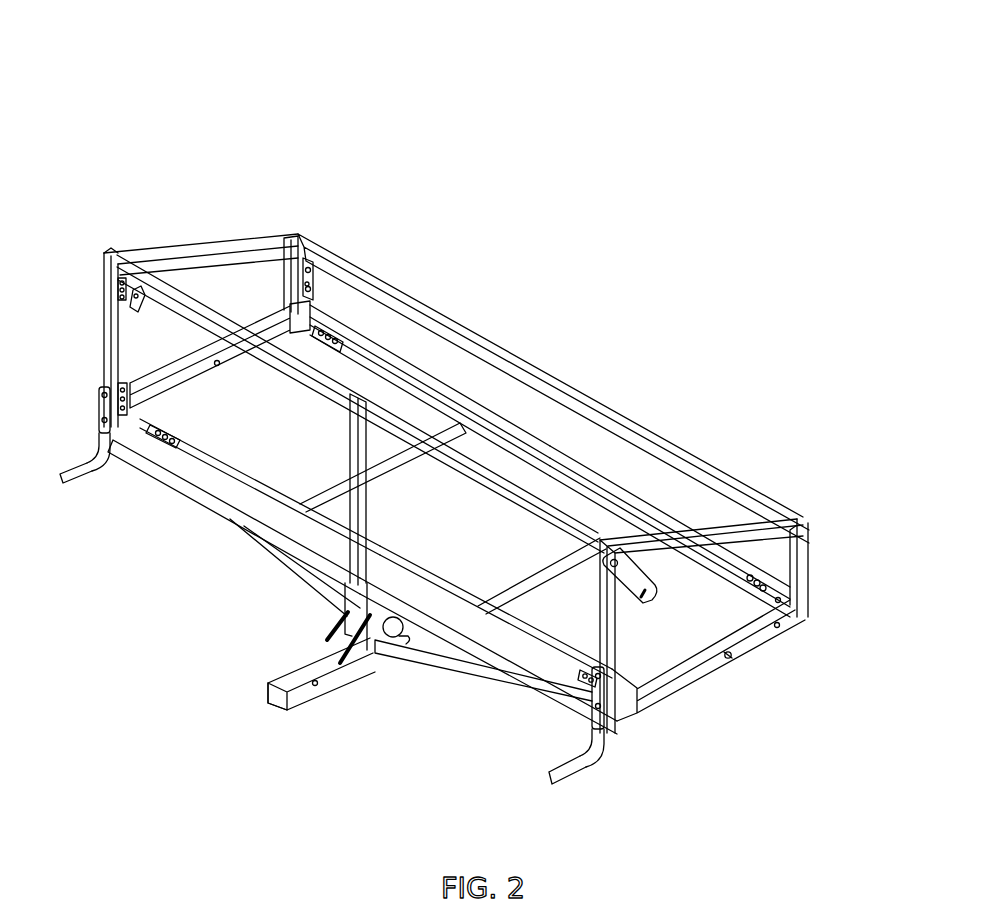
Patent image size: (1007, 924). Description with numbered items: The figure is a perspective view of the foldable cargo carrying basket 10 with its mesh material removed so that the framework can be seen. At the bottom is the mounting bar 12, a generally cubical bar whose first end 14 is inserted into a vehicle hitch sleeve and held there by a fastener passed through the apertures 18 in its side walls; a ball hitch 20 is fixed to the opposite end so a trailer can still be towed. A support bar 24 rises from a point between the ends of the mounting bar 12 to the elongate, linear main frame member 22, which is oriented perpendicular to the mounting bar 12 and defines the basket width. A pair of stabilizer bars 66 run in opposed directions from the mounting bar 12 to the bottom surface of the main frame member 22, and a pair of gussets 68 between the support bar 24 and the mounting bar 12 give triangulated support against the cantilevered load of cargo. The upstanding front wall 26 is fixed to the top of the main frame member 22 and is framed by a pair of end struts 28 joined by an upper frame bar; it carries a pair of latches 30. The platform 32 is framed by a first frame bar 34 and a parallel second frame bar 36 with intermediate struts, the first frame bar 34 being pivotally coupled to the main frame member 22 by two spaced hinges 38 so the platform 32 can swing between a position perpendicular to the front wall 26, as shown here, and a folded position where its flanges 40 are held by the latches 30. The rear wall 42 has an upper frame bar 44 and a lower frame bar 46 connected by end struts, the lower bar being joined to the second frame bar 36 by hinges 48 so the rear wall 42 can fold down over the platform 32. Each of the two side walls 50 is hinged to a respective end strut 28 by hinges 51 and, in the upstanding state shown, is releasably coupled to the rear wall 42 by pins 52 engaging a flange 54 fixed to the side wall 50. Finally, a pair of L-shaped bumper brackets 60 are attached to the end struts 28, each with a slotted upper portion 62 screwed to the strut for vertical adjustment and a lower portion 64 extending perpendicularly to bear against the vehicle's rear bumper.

The cargo carrying basket 10 is at (535, 92).
The mounting bar 12 is at (285, 674).
The first end 14 is at (266, 697).
The apertures 18 is at (313, 688).
The ball hitch 20 is at (398, 640).
The main frame member 22 is at (203, 486).
The support bar 24 is at (372, 592).
The front wall 26 is at (104, 242).
The end struts 28 is at (103, 328).
The latches 30 is at (140, 306).
The platform 32 is at (391, 540).
The first frame bar 34 is at (268, 472).
The second frame bar 36 is at (405, 375).
The hinges 38 is at (162, 447).
The flanges 40 is at (728, 660).
The rear wall 42 is at (605, 373).
The upper frame bar 44 is at (487, 340).
The lower frame bar 46 is at (512, 431).
The hinges 48 is at (348, 339).
The side walls 50 is at (186, 230).
The hinges 51 is at (116, 284).
The pins 52 is at (316, 297).
The flange 54 is at (289, 278).
The bumper brackets 60 is at (85, 445).
The upper portion 62 is at (107, 428).
The lower portion 64 is at (87, 472).
The stabilizer bars 66 is at (261, 545).
The gussets 68 is at (334, 636).